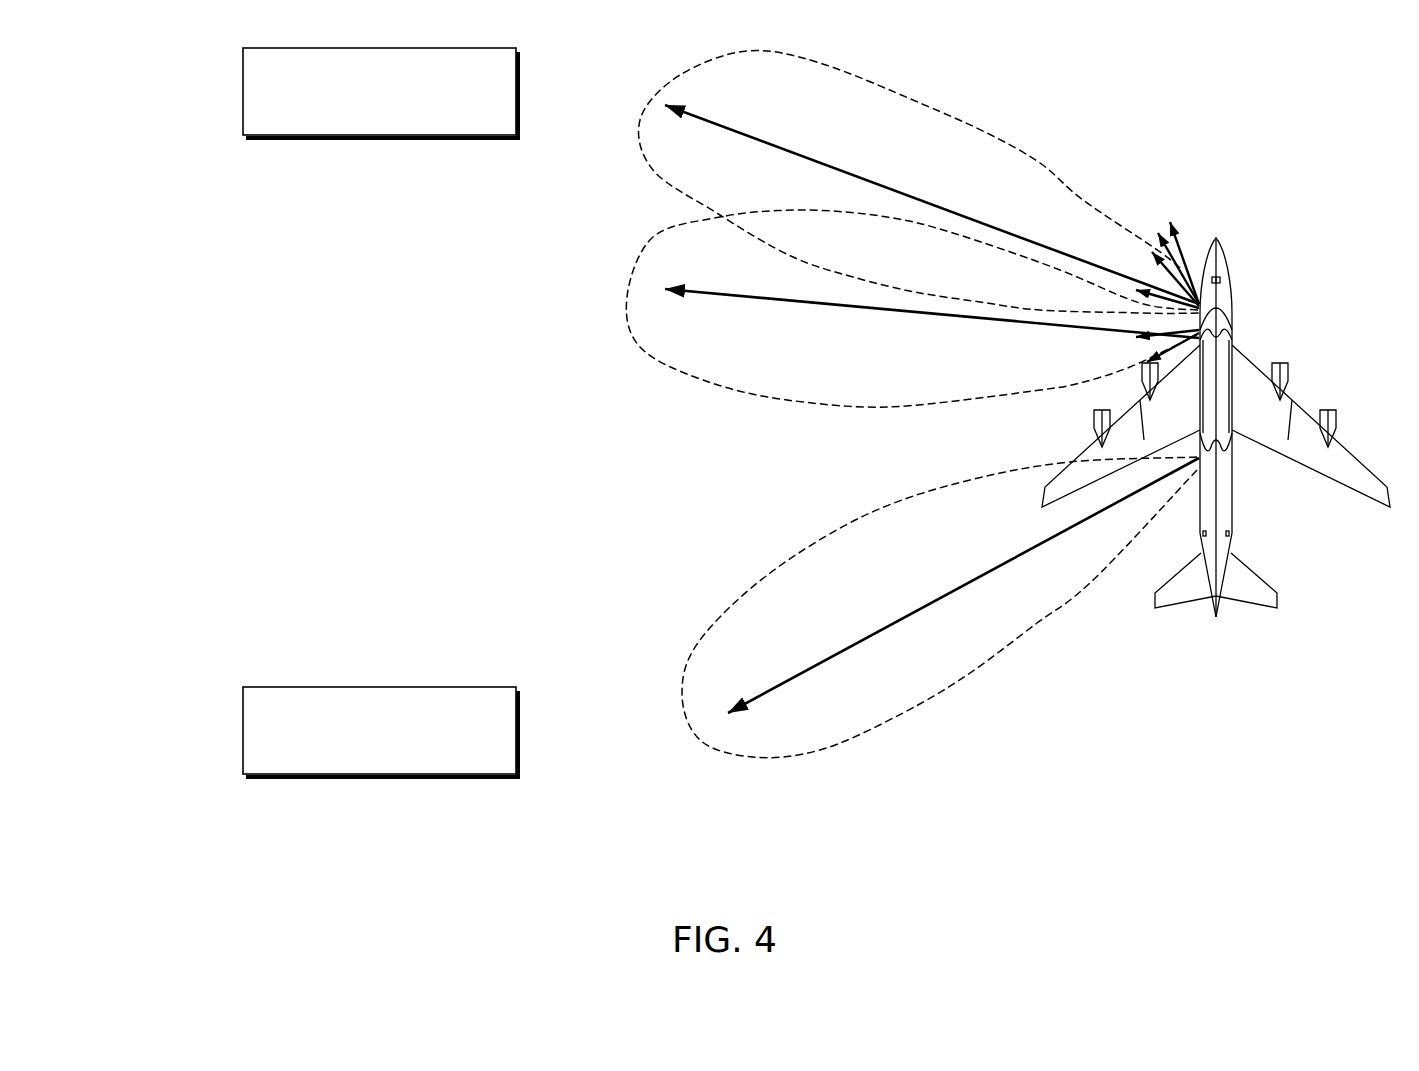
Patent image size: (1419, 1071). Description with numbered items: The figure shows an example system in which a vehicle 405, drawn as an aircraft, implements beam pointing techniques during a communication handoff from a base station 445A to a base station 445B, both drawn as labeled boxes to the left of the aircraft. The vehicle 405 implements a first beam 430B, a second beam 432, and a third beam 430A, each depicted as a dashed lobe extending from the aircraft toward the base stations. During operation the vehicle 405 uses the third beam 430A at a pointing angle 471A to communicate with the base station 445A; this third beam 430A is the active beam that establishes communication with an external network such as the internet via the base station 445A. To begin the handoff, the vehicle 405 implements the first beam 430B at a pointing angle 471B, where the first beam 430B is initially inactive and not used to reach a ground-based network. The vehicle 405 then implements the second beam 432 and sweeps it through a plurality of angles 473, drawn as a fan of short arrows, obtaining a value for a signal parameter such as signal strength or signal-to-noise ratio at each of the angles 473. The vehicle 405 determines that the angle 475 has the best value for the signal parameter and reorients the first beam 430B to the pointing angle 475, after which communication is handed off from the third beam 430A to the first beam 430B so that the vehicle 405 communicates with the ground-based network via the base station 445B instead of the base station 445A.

The vehicle 405 is at (1232, 298).
The third beam 430A is at (966, 682).
The first beam 430B is at (758, 393).
The second beam 432 is at (994, 131).
The base station 445A is at (243, 731).
The base station 445B is at (243, 92).
The pointing angle 471A is at (900, 622).
The pointing angle 471B is at (700, 290).
The plurality of angles 473 is at (1195, 216).
The angle 475 is at (817, 160).